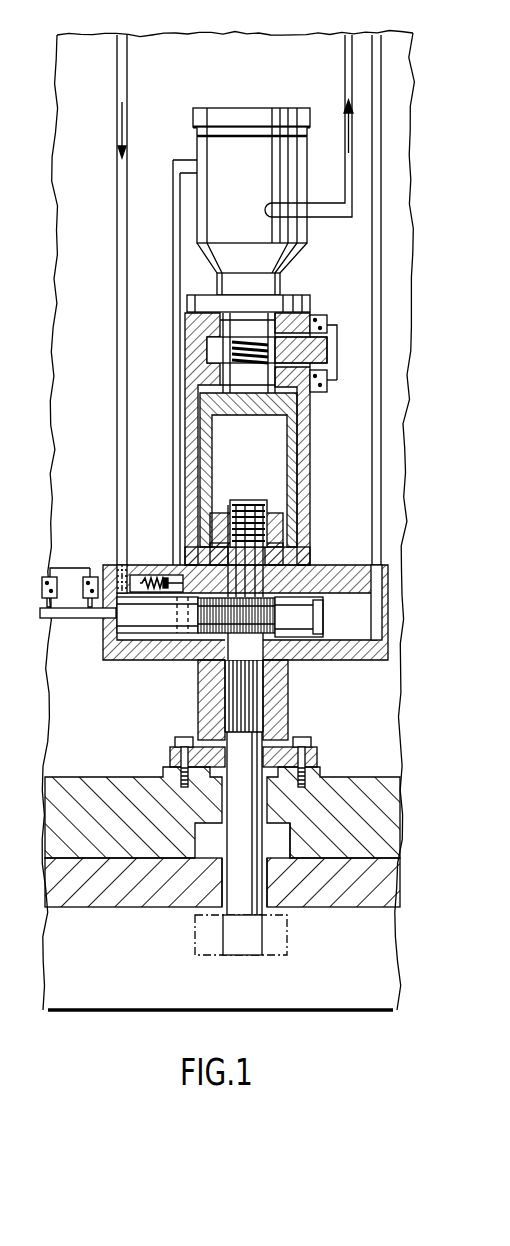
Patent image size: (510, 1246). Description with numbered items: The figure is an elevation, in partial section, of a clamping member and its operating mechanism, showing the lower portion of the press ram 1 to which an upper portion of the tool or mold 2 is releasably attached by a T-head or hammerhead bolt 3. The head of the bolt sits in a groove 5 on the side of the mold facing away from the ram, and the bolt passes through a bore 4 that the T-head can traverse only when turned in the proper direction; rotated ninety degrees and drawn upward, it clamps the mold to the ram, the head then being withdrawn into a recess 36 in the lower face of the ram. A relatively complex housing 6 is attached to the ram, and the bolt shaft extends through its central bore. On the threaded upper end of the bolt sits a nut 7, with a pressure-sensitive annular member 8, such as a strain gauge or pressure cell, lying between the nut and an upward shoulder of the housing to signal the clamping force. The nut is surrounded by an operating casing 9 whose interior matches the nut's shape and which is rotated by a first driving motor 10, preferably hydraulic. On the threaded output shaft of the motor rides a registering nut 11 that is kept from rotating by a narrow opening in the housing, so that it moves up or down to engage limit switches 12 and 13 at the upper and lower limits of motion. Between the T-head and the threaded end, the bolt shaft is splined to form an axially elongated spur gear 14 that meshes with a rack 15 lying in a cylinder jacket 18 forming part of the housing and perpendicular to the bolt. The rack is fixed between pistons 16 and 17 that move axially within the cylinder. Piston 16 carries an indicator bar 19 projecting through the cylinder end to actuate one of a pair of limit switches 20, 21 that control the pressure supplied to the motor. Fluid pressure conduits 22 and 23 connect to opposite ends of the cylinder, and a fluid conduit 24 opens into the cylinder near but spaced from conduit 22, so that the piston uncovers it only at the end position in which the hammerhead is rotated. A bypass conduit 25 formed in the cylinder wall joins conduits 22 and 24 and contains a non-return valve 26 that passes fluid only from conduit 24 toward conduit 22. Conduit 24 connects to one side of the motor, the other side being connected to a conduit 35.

The press ram 1 is at (73, 812).
The tool or mold 2 is at (53, 887).
The T-head or hammerhead bolt 3 is at (253, 943).
The bore 4 is at (263, 885).
The groove 5 is at (80, 990).
The housing 6 is at (277, 710).
The nut 7 is at (275, 525).
The pressure-sensitive annular member 8 is at (283, 553).
The operating casing 9 is at (298, 455).
The first driving motor 10 is at (228, 137).
The registering nut 11 is at (327, 352).
The limit switch 12 is at (320, 316).
The limit switch 13 is at (320, 393).
The spur gear 14 is at (237, 703).
The rack 15 is at (205, 635).
The piston 16 is at (143, 625).
The piston 17 is at (303, 650).
The cylinder jacket 18 is at (358, 653).
The indicator bar 19 is at (75, 619).
The sensor 20 is at (51, 576).
The limit switches 21 is at (88, 576).
The fluid pressure conduit 22 is at (125, 483).
The fluid pressure conduit 23 is at (378, 520).
The fluid conduit 24 is at (178, 446).
The bypass conduit 25 is at (130, 567).
The non-return valve 26 is at (157, 577).
The conduit 35 is at (350, 67).
The recess 36 is at (292, 832).